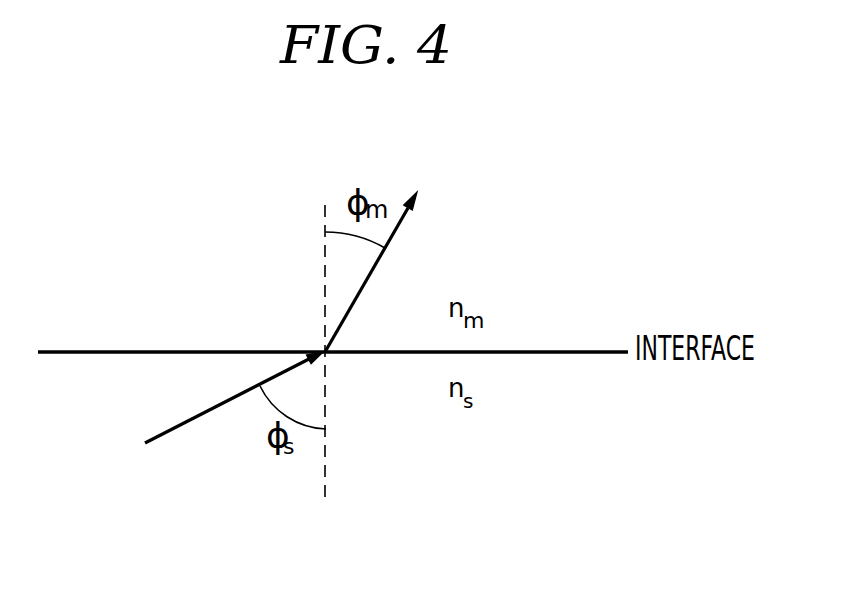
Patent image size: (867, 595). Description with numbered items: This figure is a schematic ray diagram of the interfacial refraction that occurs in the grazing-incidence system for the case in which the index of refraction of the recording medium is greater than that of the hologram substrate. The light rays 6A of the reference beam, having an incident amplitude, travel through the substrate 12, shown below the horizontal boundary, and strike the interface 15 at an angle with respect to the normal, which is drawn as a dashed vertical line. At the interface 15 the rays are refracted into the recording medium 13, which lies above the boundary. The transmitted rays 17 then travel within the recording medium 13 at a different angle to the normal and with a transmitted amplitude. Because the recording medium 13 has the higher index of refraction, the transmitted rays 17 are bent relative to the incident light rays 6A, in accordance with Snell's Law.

The light rays of the reference beam 6A is at (188, 425).
The transmitted rays 17 is at (392, 220).
The interface 15 is at (592, 349).
The recording medium 13 is at (538, 249).
The substrate 12 is at (538, 476).